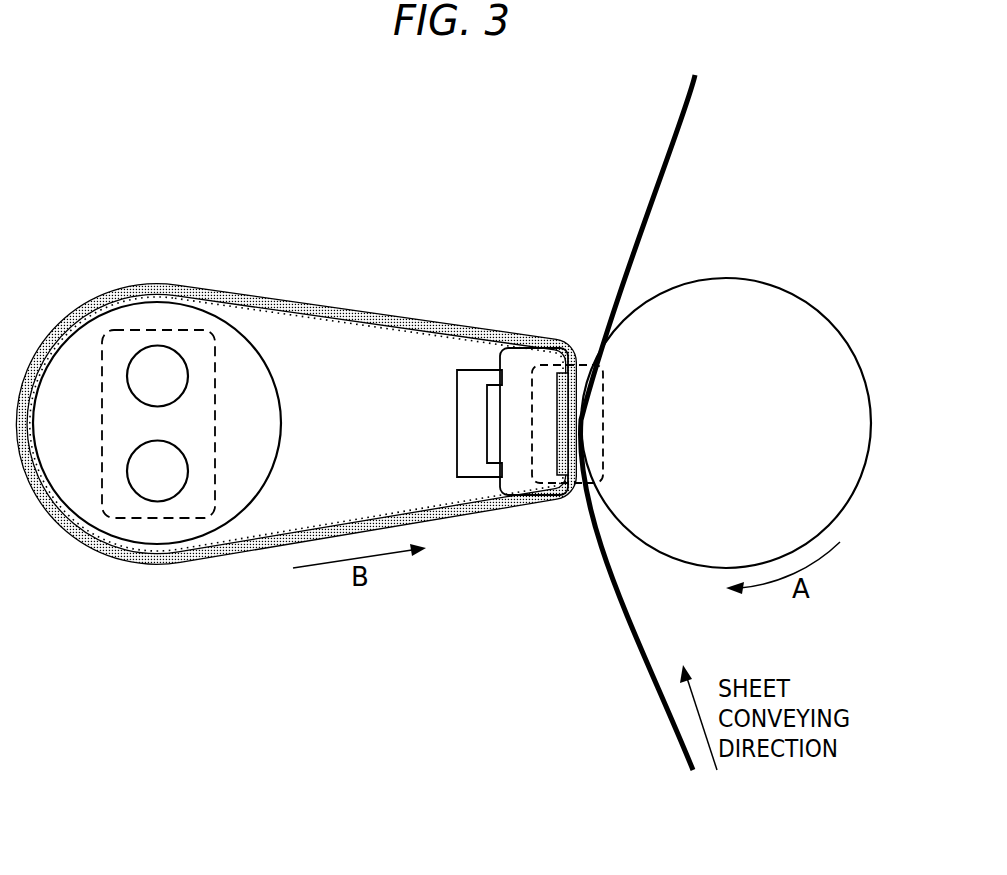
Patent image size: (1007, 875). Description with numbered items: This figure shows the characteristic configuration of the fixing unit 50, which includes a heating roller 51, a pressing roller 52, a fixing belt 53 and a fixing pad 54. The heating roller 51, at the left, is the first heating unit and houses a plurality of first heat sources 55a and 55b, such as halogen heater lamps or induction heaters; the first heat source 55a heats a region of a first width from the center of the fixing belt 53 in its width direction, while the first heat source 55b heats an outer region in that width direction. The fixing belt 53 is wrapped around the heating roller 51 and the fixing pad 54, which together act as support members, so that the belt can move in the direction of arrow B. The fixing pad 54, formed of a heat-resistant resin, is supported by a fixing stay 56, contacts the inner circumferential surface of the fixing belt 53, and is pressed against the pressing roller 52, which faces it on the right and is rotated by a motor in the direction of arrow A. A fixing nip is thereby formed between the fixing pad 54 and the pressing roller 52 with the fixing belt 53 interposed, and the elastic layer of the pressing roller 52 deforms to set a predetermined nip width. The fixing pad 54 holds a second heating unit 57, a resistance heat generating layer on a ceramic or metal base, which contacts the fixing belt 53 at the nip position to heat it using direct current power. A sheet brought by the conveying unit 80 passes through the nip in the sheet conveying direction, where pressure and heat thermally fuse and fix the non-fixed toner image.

The fixing unit 50 is at (824, 114).
The heating roller 51 is at (292, 413).
The pressing roller 52 is at (727, 277).
The fixing belt 53 is at (255, 292).
The fixing pad 54 is at (515, 373).
The first heat source 55a is at (159, 372).
The first heat source 55b is at (159, 476).
The fixing stay 56 is at (474, 379).
The second heating unit 57 is at (562, 438).
The conveying unit 80 is at (670, 152).